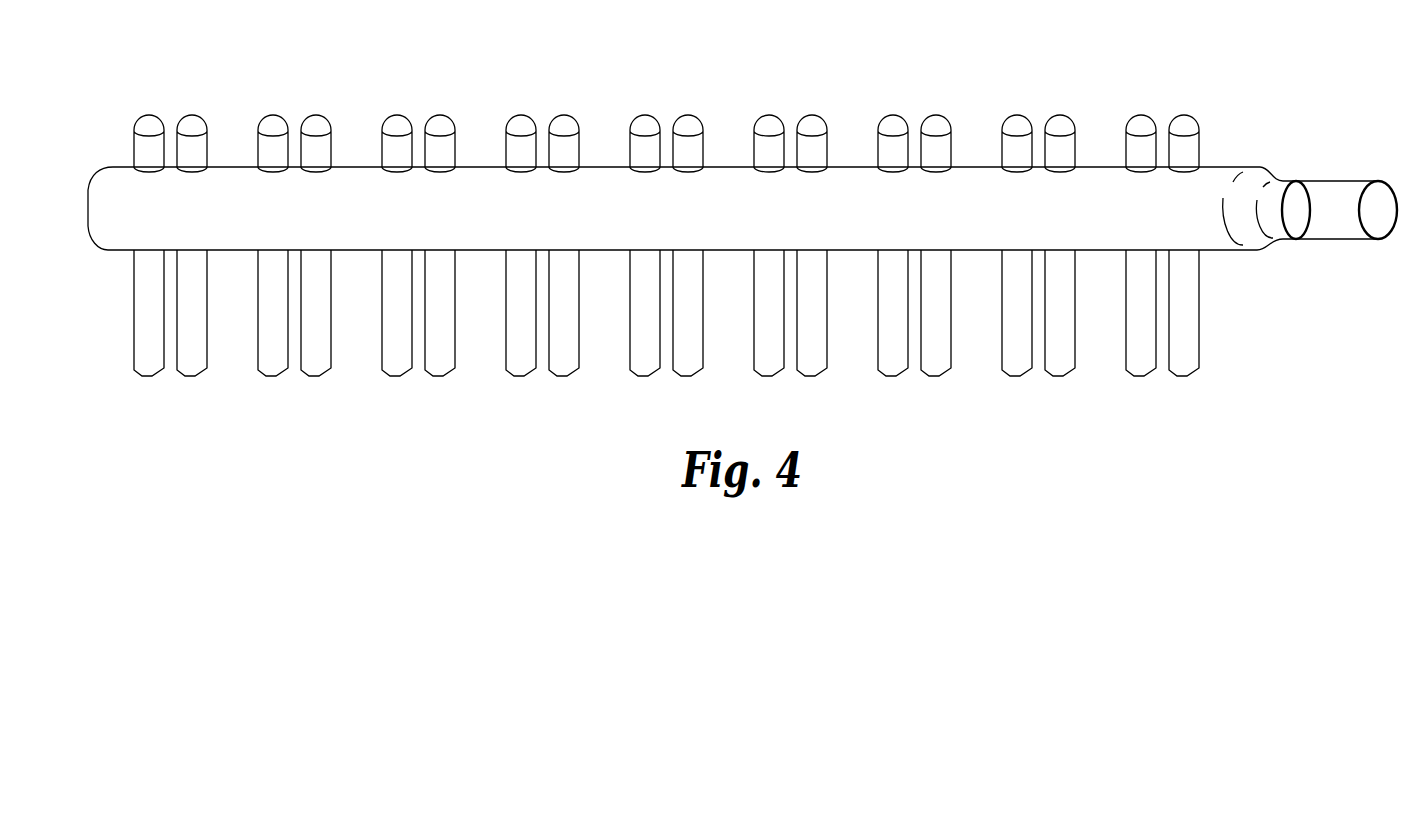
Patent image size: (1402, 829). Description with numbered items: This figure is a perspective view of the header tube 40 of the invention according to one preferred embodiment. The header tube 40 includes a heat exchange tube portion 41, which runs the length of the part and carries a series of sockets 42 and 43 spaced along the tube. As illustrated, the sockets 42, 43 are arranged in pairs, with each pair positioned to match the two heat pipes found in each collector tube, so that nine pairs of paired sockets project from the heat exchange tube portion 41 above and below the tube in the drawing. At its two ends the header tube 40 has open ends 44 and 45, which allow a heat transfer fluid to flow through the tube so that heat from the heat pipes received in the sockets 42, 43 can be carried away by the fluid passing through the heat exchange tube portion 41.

The header tube 40 is at (1317, 148).
The heat exchange tube portion 41 is at (1207, 237).
The socket 42 is at (763, 122).
The socket 43 is at (813, 122).
The open end 44 is at (1380, 212).
The open end 45 is at (92, 176).